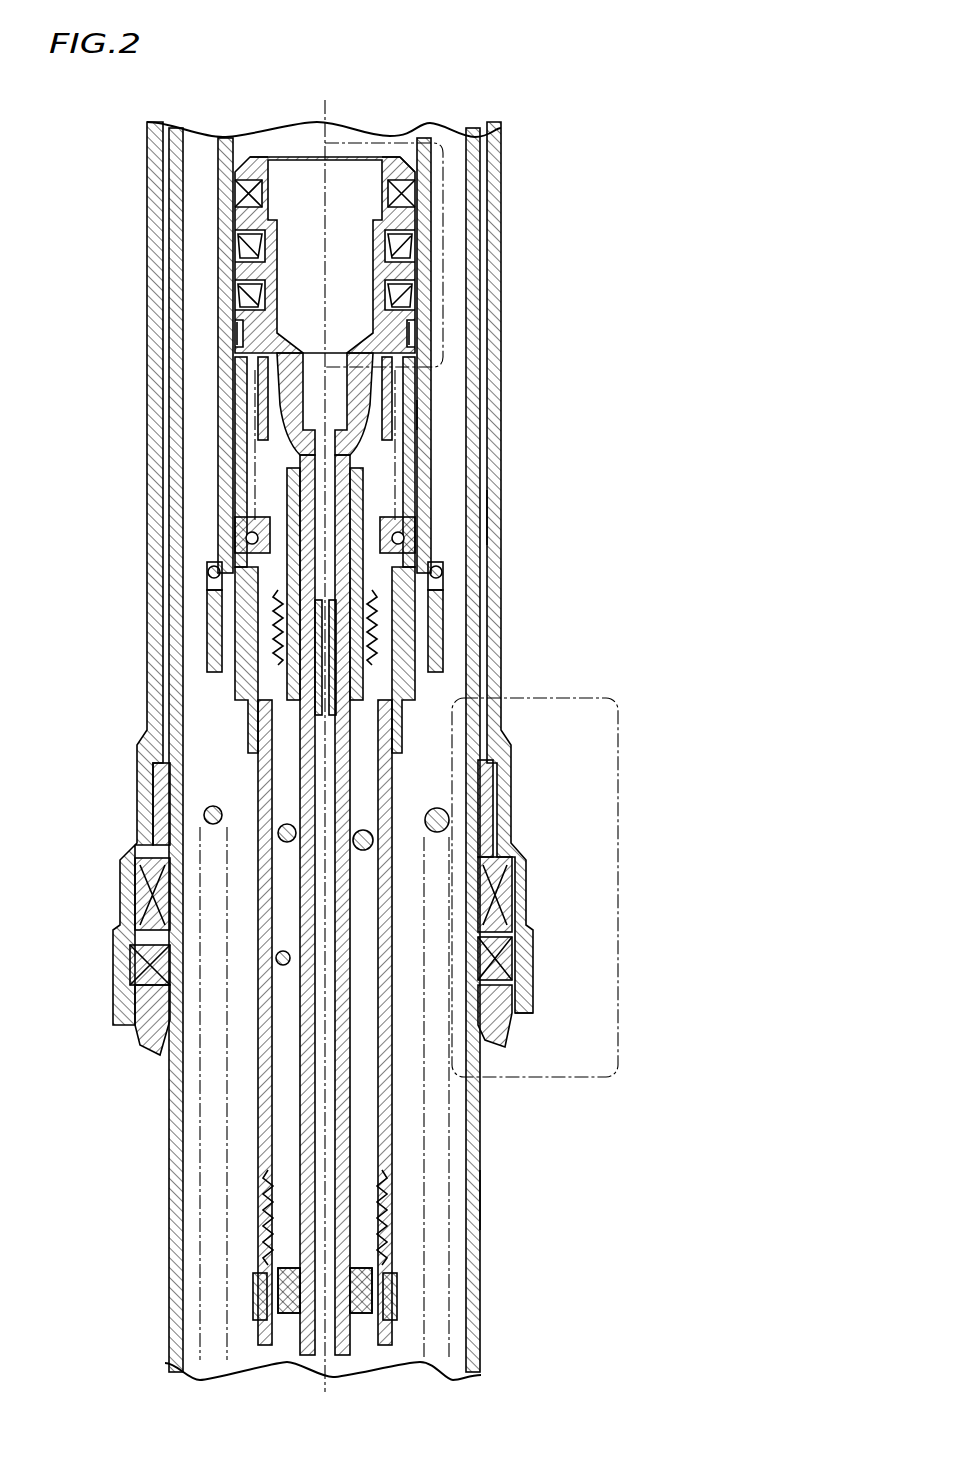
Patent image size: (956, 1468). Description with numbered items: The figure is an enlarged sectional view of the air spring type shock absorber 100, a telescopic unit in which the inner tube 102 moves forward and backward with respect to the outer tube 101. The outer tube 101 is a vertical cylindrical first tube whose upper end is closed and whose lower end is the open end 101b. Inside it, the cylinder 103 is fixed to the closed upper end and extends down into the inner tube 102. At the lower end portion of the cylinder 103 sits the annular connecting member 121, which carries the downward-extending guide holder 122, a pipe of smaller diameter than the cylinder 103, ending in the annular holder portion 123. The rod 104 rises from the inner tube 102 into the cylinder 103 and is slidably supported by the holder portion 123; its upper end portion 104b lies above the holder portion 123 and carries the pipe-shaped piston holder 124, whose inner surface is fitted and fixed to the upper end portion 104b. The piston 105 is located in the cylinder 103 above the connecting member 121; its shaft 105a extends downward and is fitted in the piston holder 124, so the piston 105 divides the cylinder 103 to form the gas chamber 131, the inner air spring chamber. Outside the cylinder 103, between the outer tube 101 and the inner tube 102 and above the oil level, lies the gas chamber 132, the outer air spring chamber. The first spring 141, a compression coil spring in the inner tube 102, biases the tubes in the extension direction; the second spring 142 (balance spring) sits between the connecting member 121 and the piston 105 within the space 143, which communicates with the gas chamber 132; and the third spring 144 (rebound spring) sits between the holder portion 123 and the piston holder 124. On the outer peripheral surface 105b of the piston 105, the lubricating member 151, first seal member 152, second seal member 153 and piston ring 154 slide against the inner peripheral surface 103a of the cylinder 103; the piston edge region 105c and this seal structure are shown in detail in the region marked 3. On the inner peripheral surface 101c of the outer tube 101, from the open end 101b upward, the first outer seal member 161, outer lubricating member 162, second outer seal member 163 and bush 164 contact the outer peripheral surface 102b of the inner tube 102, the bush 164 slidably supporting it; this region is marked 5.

The air spring type shock absorber 100 is at (637, 190).
The outer tube 101 is at (148, 268).
The open end 101b is at (532, 1013).
The inner peripheral surface 101c is at (485, 500).
The inner tube 102 is at (170, 1268).
The outer peripheral surface 102b is at (482, 1197).
The cylinder 103 is at (218, 540).
The inner peripheral surface 103a is at (418, 428).
The rod 104 is at (297, 1235).
The upper end portion 104b is at (290, 700).
The piston 105 is at (350, 172).
The shaft 105a is at (287, 470).
The outer peripheral surface 105b is at (413, 175).
The cap chamfer 105c is at (393, 160).
The connecting member 121 is at (240, 682).
The guide holder 122 is at (257, 848).
The holder portion 123 is at (280, 1045).
The piston holder 124 is at (287, 506).
The gas chamber 131 is at (275, 143).
The gas chamber 132 is at (247, 1350).
The first spring 141 is at (200, 1158).
The second spring 142 is at (268, 437).
The space 143 is at (275, 445).
The third spring 144 is at (278, 955).
The lubricating member 151 is at (405, 197).
The first seal member 152 is at (413, 248).
The second seal member 153 is at (413, 292).
The piston ring 154 is at (415, 333).
The first outer seal member 161 is at (508, 1030).
The outer lubricating member 162 is at (505, 968).
The second outer seal member 163 is at (483, 920).
The bush 164 is at (483, 805).
The region shown in FIG. 3 is at (460, 140).
The region shown in FIG. 5 is at (618, 703).